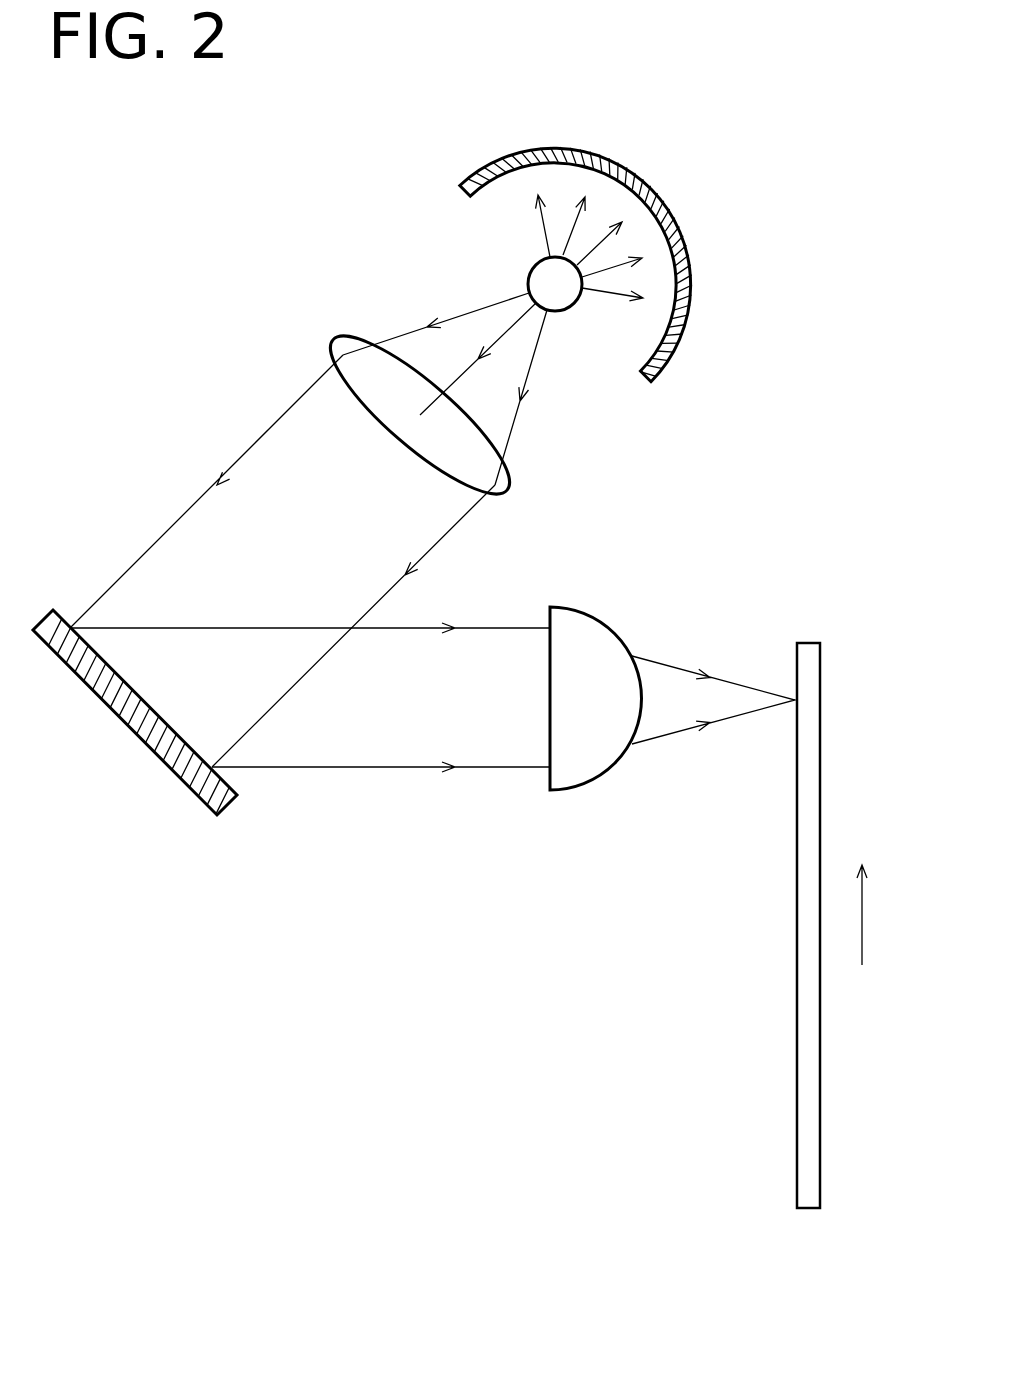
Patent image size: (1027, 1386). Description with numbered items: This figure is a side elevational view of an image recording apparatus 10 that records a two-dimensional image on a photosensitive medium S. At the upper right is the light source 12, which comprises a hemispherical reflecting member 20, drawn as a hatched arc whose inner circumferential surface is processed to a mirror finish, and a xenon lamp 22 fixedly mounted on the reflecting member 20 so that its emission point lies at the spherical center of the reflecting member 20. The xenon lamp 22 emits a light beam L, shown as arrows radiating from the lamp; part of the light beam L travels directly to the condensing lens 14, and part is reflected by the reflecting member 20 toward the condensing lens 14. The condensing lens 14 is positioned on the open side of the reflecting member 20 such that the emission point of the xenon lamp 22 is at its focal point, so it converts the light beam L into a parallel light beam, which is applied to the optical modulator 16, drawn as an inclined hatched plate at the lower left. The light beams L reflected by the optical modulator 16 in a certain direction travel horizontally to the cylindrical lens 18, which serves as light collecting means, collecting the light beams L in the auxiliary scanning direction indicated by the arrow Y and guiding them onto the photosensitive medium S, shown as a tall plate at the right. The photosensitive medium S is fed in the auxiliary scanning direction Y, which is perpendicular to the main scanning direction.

The image recording apparatus 10 is at (911, 81).
The light source 12 is at (602, 135).
The condensing lens 14 is at (345, 345).
The optical modulator 16 is at (224, 802).
The cylindrical lens 18 is at (580, 625).
The reflecting member 20 is at (507, 160).
The xenon lamp 22 is at (557, 293).
The light beam L is at (470, 312).
The photosensitive medium S is at (818, 648).
The auxiliary scanning direction Y is at (877, 915).